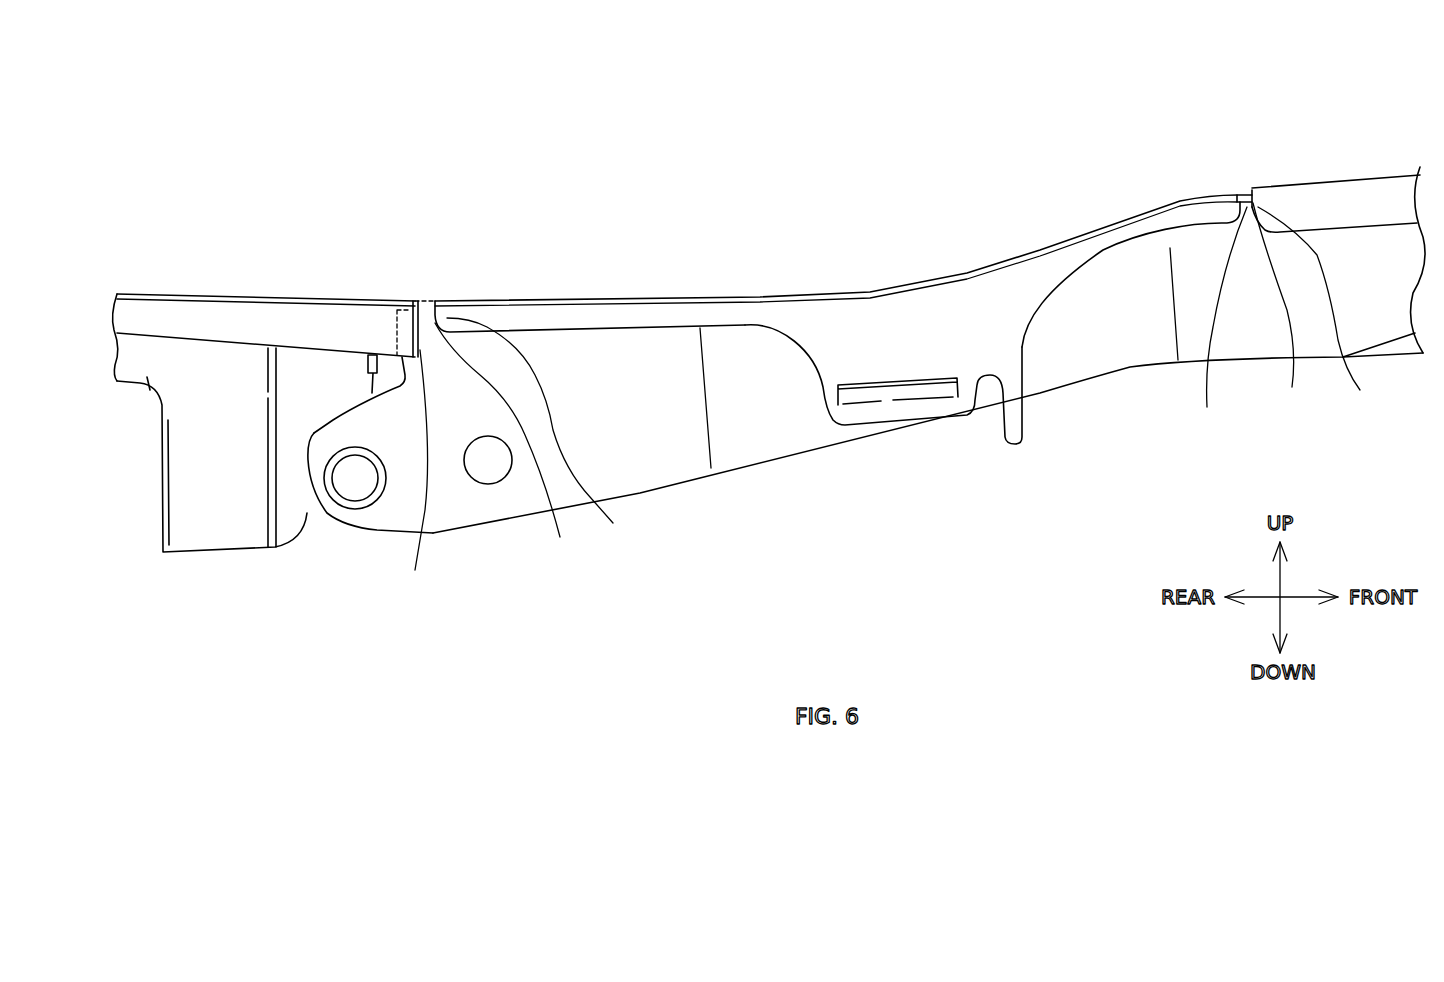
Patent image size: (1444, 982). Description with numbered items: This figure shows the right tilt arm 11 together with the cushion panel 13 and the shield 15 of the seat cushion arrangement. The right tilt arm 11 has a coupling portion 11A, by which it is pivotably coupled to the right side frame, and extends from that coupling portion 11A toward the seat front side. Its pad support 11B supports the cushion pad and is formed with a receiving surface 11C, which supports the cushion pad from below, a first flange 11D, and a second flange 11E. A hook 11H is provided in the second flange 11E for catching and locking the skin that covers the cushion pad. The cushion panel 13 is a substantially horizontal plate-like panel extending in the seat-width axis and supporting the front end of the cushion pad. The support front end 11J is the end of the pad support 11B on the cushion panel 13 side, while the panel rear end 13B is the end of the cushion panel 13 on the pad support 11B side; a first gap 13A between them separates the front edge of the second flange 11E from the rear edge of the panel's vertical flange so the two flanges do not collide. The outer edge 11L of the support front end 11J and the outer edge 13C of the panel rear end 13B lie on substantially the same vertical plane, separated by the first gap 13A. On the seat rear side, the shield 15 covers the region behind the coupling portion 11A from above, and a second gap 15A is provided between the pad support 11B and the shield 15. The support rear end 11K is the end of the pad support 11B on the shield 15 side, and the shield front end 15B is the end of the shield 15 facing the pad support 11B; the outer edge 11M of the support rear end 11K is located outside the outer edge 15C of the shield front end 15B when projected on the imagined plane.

The right tilt arm 11 is at (805, 293).
The coupling portion 11A is at (368, 517).
The pad support 11B is at (730, 297).
The receiving surface 11C is at (565, 297).
The first flange 11D is at (672, 447).
The second flange 11E is at (647, 317).
The hook 11H is at (887, 401).
The support front end 11J is at (1221, 321).
The support rear end 11K is at (511, 449).
The outer edge 11L is at (1227, 213).
The outer edge 11M is at (547, 435).
The cushion panel 13 is at (1337, 178).
The first gap 13A is at (1250, 193).
The panel rear end 13B is at (1282, 310).
The outer edge 13C is at (1336, 307).
The shield 15 is at (219, 298).
The second gap 15A is at (427, 303).
The shield front end 15B is at (427, 347).
The outer edge 15C is at (416, 474).